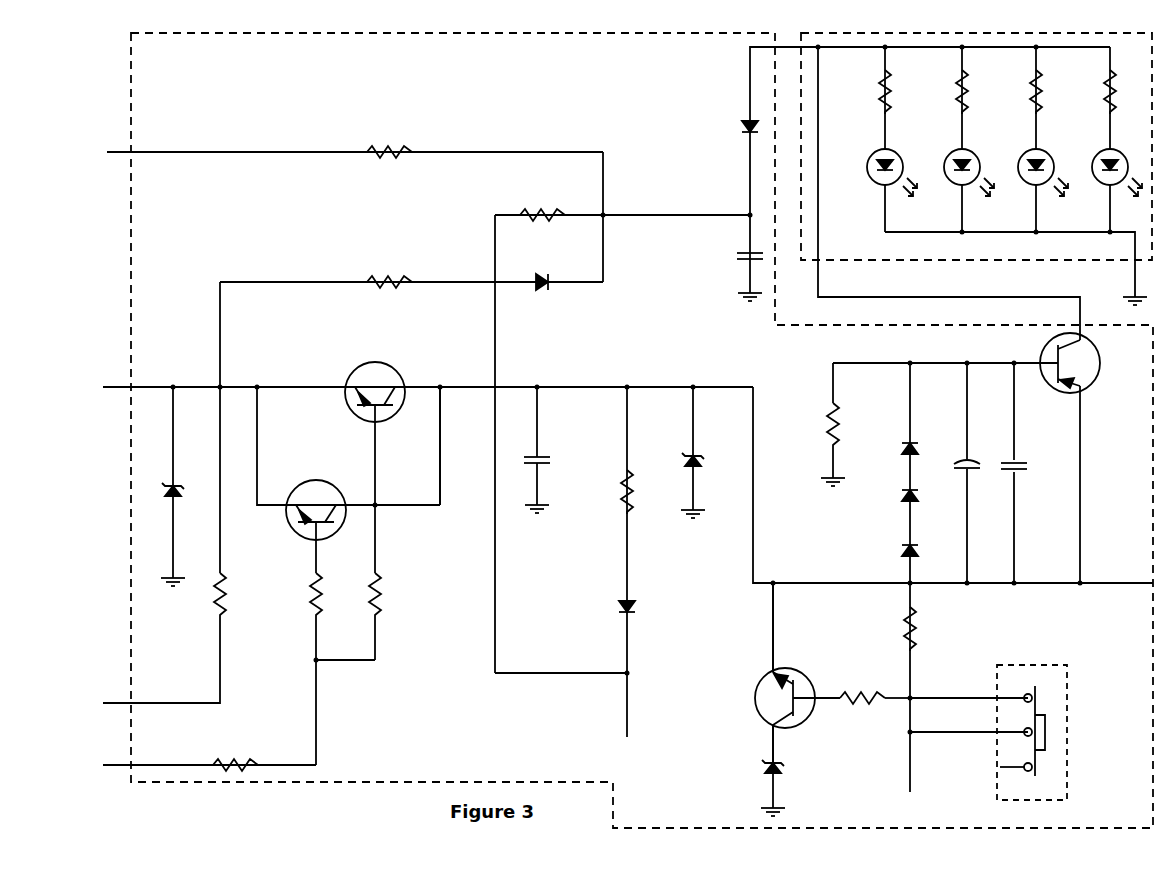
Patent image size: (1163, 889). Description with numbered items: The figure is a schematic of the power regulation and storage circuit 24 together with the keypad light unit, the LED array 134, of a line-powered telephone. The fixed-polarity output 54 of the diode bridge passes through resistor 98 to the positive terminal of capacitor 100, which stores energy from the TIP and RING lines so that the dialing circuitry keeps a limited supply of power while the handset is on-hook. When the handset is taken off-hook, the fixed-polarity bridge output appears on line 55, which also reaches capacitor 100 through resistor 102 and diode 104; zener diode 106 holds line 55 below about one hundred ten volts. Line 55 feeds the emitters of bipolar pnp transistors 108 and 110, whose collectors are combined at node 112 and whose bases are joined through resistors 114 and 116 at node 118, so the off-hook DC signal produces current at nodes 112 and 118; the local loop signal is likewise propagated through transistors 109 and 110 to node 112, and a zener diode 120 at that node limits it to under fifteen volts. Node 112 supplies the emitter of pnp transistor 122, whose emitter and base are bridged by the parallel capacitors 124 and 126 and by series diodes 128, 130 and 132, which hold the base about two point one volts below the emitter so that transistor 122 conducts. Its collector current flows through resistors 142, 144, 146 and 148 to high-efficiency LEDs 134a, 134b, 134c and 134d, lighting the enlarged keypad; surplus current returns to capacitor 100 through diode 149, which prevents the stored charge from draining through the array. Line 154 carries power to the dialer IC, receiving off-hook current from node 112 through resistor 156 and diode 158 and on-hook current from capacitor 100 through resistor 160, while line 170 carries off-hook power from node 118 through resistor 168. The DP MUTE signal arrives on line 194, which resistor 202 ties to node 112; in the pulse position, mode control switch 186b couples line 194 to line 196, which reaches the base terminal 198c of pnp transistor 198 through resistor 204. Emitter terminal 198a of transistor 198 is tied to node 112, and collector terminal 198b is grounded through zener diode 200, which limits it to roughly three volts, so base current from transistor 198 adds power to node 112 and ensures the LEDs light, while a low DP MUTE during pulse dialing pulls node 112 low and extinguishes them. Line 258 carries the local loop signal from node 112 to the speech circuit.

The power regulation and storage circuit 24 is at (642, 431).
The fixed-polarity output 54 is at (355, 197).
The line 55 is at (628, 466).
The resistor 98 is at (389, 133).
The capacitor 100 is at (720, 276).
The resistor 102 is at (411, 404).
The diode 104 is at (537, 308).
The zener diode 106 is at (160, 486).
The transistor 108 is at (348, 401).
The transistor 109 is at (316, 508).
The transistor 110 is at (375, 449).
The node 112 is at (442, 422).
The resistor 114 is at (286, 669).
The resistor 116 is at (405, 616).
The node 118 is at (316, 666).
The zener diode 120 is at (668, 452).
The transistor 122 is at (990, 458).
The capacitor 124 is at (1041, 473).
The capacitor 126 is at (979, 473).
The diode 128 is at (879, 577).
The diode 130 is at (879, 495).
The diode 132 is at (879, 550).
The LED array 134 is at (966, 186).
The LED 134a is at (877, 190).
The LED 134b is at (954, 190).
The LED 134c is at (1028, 190).
The LED 134d is at (1102, 190).
The resistor 142 is at (856, 98).
The resistor 144 is at (933, 98).
The resistor 146 is at (1007, 98).
The resistor 148 is at (1081, 98).
The diode 149 is at (896, 169).
The line 154 is at (591, 699).
The resistor 156 is at (594, 562).
The diode 158 is at (596, 605).
The resistor 160 is at (607, 432).
The resistor 168 is at (235, 744).
The line 170 is at (209, 669).
The mode control switch 186b is at (1066, 732).
The line 194 is at (938, 760).
The line 196 is at (969, 676).
The transistor 198 is at (766, 675).
The emitter terminal 198a is at (738, 627).
The collector terminal 198b is at (738, 743).
The base terminal 198c is at (824, 723).
The zener diode 200 is at (744, 788).
The resistor 202 is at (869, 629).
The resistor 204 is at (866, 678).
The line 258 is at (1119, 609).